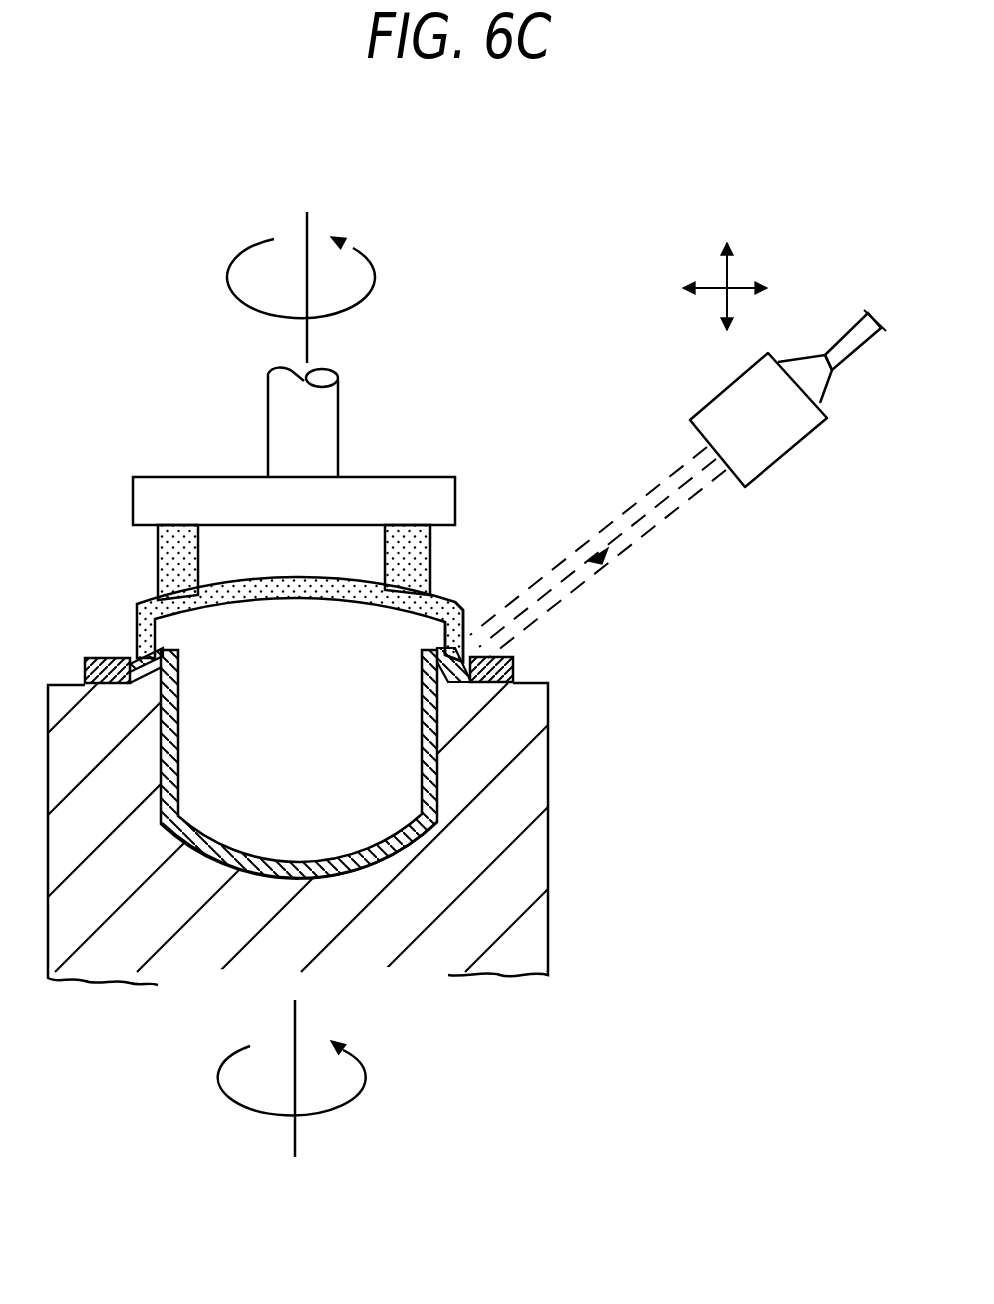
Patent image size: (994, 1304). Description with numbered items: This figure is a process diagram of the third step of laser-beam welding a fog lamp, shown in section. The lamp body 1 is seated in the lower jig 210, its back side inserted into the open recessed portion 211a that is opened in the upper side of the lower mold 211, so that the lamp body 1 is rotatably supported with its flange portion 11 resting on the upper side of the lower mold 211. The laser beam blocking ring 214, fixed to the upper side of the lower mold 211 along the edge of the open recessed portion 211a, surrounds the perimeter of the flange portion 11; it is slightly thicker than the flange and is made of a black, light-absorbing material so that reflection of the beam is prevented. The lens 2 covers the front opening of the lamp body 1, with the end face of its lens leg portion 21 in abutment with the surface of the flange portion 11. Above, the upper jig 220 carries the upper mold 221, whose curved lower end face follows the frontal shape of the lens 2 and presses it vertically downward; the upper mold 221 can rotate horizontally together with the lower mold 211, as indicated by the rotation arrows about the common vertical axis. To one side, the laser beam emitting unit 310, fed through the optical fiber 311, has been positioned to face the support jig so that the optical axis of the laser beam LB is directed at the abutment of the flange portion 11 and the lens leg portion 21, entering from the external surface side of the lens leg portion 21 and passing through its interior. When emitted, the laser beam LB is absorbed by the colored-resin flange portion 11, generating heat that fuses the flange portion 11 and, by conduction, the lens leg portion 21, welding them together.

The lamp body 1 is at (292, 863).
The flange portion 11 is at (457, 672).
The lens 2 is at (265, 600).
The lens leg portion 21 is at (452, 630).
The lower jig 210 is at (533, 1002).
The lower mold 211 is at (527, 895).
The open recessed portion 211a is at (208, 855).
The laser beam blocking ring 214 is at (513, 668).
The upper jig 220 is at (420, 395).
The upper mold 221 is at (172, 556).
The laser beam emitting unit 310 is at (785, 442).
The optical fiber 311 is at (848, 338).
The laser beam LB is at (660, 527).